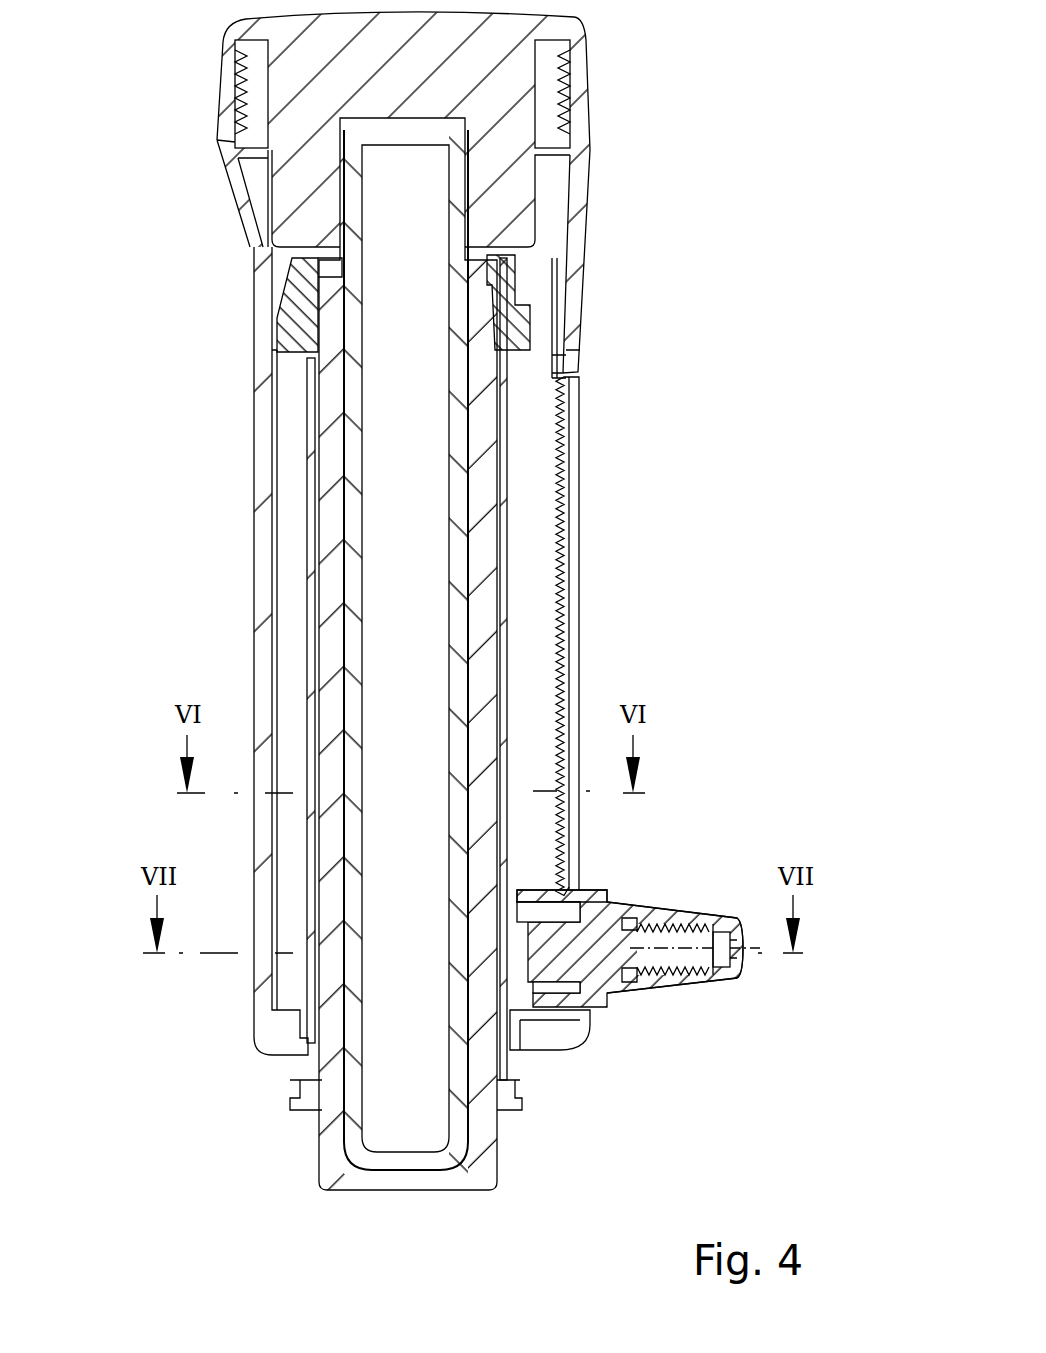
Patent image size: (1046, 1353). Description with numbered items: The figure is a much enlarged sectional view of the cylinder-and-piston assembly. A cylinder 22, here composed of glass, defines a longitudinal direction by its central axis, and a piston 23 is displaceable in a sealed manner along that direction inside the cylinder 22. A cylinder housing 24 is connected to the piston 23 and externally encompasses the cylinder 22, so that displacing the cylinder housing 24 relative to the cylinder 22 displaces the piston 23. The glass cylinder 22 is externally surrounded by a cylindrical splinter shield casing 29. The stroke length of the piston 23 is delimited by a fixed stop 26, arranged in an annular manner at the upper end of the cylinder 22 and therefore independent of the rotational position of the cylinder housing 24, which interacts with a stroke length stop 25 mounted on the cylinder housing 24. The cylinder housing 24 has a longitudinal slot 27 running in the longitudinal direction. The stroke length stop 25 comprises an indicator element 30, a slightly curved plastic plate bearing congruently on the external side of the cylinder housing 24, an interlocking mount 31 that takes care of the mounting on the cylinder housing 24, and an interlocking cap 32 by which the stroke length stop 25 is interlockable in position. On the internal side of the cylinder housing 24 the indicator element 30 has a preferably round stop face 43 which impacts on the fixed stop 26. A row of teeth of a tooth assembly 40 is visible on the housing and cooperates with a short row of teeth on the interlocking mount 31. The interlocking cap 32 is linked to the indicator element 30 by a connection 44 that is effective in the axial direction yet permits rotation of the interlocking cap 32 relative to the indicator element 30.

The cylinder housing 24 is at (578, 213).
The fixed stop 26 is at (530, 338).
The splinter shield casing 29 is at (278, 433).
The cylinder 22 is at (310, 492).
The piston 23 is at (350, 547).
The longitudinal slot 27 is at (575, 497).
The tooth assembly 40 is at (545, 580).
The stroke length stop 25 is at (635, 951).
The stop face 43 is at (530, 892).
The indicator element 30 is at (605, 1007).
The connection 44 is at (640, 995).
The interlocking mount 31 is at (680, 990).
The interlocking cap 32 is at (722, 980).